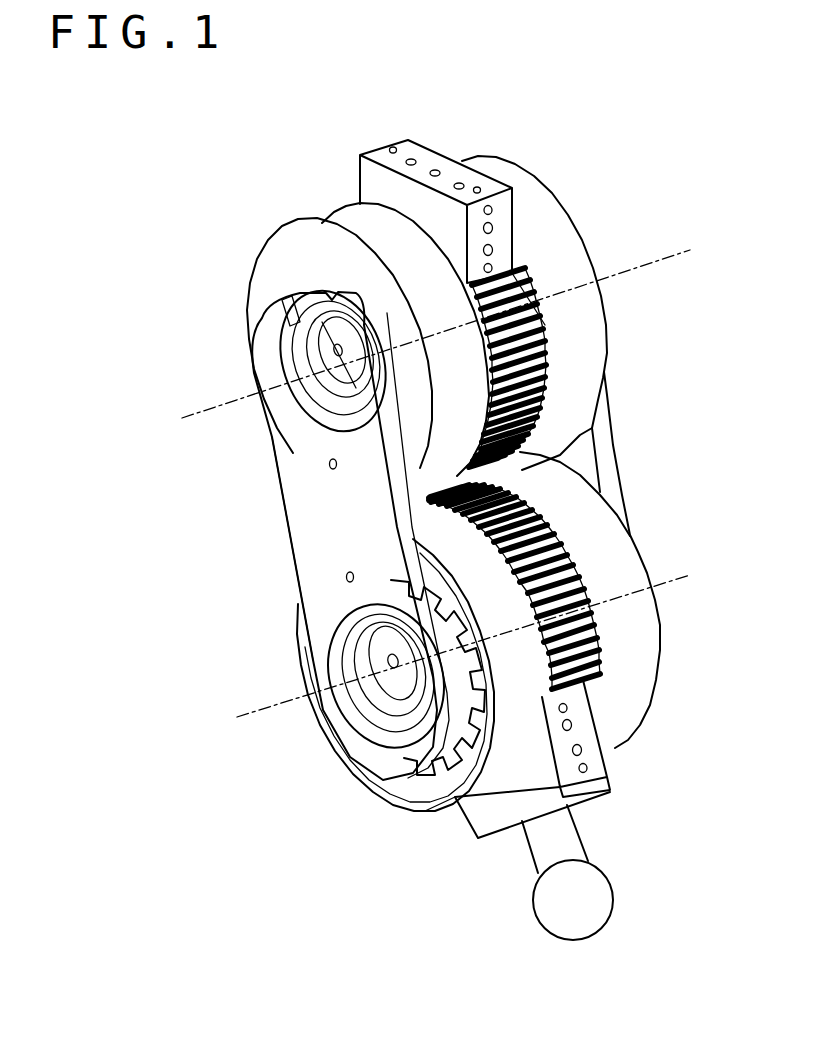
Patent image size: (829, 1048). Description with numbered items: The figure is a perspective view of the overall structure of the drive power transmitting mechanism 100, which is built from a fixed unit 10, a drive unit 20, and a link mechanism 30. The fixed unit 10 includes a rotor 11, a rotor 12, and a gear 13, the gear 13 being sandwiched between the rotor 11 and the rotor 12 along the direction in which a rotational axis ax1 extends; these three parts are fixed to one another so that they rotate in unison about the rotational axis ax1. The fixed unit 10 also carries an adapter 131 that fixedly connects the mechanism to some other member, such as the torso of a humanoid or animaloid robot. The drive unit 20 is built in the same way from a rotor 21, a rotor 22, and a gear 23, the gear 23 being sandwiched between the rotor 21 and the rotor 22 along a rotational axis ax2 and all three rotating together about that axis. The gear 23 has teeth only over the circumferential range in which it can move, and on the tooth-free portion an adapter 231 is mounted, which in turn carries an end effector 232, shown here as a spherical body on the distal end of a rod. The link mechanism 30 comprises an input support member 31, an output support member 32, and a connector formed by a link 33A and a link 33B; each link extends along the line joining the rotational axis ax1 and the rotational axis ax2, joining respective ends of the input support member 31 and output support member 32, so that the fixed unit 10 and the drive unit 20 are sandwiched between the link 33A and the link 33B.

The drive power transmitting mechanism 100 is at (684, 212).
The fixed unit 10 is at (560, 204).
The rotor 11 is at (281, 236).
The rotor 12 is at (516, 178).
The gear 13 is at (557, 349).
The adapter 131 is at (374, 152).
The drive unit 20 is at (637, 543).
The rotor 21 is at (297, 633).
The rotor 22 is at (658, 620).
The gear 23 is at (604, 665).
The adapter 231 is at (610, 769).
The end effector 232 is at (604, 898).
The link mechanism 30 is at (294, 554).
The input support member 31 is at (325, 369).
The output support member 32 is at (392, 688).
The link 33A is at (284, 503).
The link 33B is at (615, 445).
The rotational axis ax1 is at (410, 343).
The rotational axis ax2 is at (437, 657).